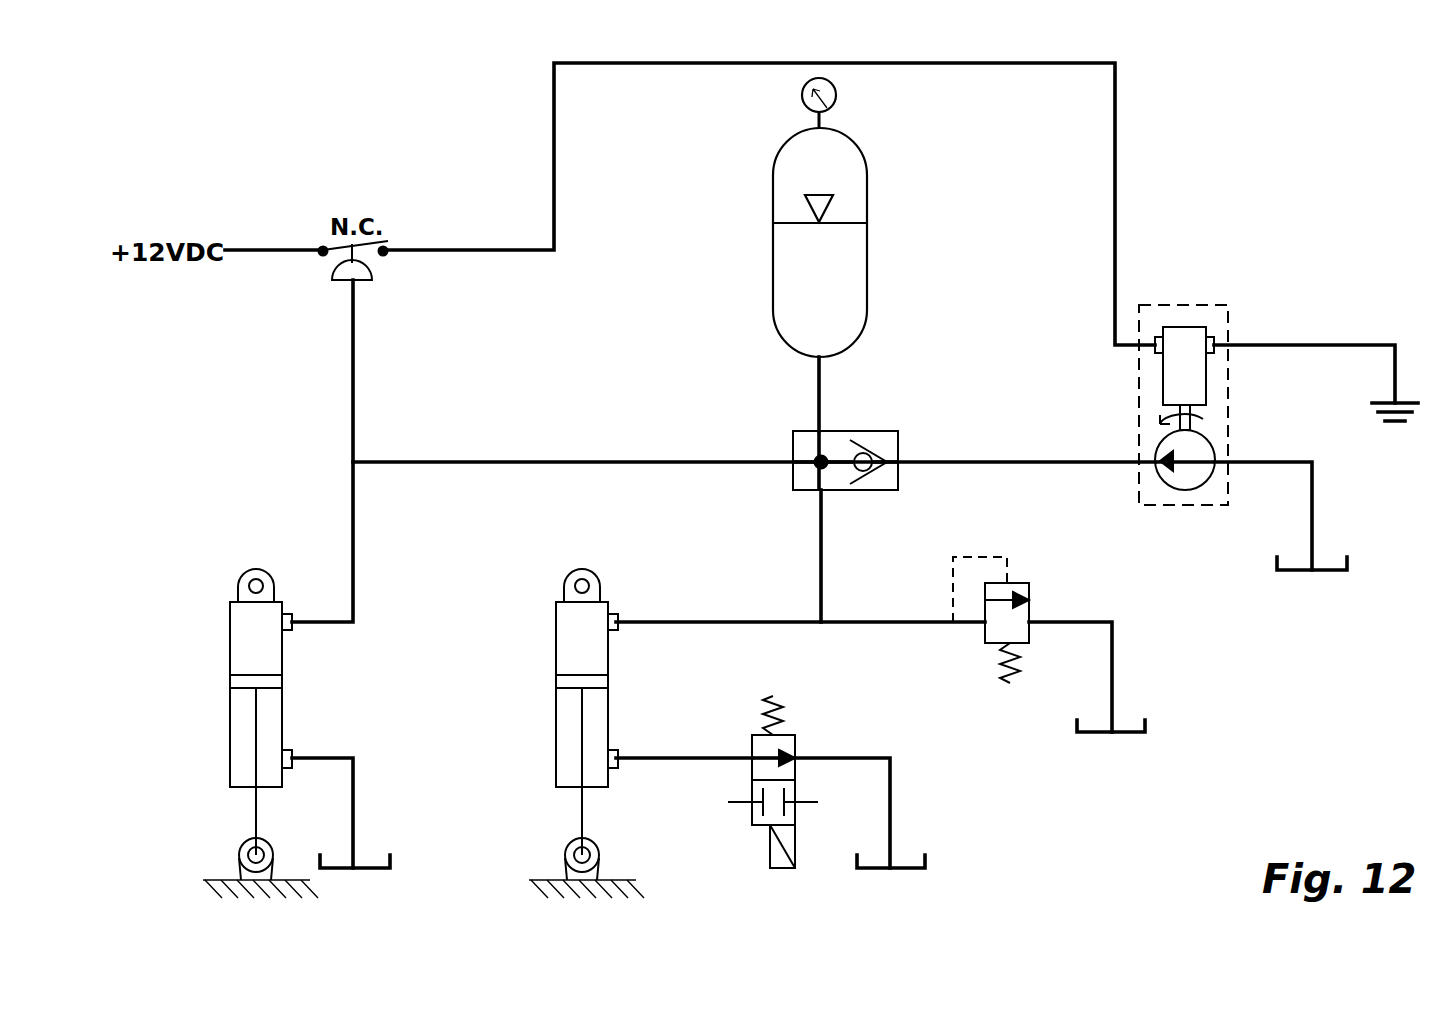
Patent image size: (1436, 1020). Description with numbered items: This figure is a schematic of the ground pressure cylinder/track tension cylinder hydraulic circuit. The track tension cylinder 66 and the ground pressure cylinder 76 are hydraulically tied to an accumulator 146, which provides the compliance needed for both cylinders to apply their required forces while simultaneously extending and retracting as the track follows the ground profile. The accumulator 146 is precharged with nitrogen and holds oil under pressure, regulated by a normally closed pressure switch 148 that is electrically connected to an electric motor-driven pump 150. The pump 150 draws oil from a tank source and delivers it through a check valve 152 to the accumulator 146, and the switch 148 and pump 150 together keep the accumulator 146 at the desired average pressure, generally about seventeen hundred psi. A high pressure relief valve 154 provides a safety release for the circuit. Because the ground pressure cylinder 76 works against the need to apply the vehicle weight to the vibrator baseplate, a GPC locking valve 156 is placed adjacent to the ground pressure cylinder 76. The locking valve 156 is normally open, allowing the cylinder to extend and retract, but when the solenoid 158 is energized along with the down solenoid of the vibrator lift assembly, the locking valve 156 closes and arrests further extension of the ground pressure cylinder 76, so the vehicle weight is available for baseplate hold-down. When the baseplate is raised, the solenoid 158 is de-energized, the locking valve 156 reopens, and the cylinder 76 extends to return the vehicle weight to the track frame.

The track tension cylinder 66 is at (228, 650).
The ground pressure cylinder 76 is at (553, 650).
The accumulator 146 is at (773, 271).
The pressure switch 148 is at (336, 283).
The electric motor-driven pump 150 is at (1207, 305).
The check valve 152 is at (880, 447).
The high pressure relief valve 154 is at (1029, 590).
The GPC locking valve 156 is at (752, 773).
The solenoid 158 is at (770, 858).